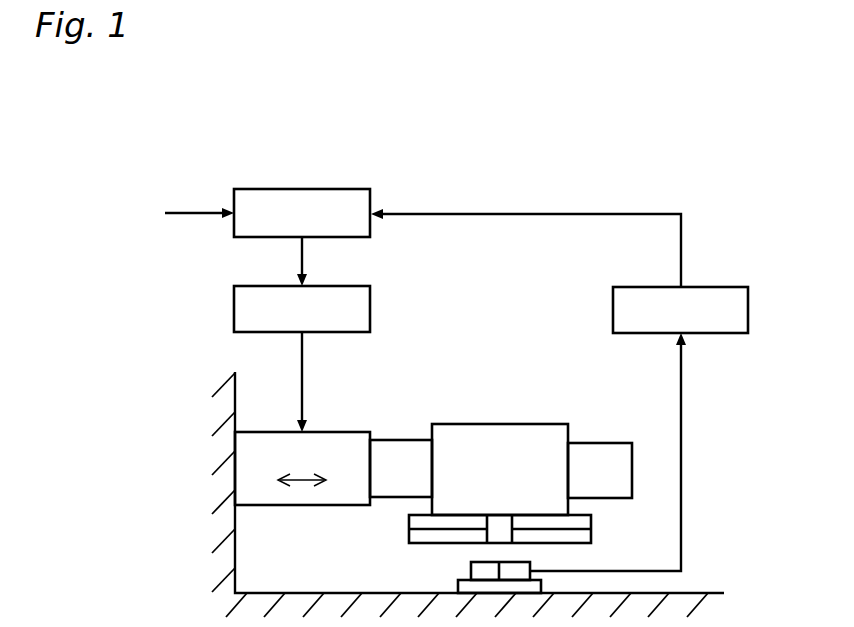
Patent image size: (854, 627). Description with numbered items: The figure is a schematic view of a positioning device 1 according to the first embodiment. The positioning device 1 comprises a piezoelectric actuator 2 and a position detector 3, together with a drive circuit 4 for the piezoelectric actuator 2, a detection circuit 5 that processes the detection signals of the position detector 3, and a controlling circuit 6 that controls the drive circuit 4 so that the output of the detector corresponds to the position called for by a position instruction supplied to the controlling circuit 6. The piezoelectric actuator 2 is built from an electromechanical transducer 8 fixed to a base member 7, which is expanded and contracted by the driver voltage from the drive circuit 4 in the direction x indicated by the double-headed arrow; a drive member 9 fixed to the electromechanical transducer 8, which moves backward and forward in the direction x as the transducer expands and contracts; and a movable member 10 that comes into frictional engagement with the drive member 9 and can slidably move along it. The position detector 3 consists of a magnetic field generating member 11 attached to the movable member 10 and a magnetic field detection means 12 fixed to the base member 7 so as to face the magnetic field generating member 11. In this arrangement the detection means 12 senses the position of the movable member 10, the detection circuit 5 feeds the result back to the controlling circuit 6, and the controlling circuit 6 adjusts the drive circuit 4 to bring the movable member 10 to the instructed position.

The positioning device 1 is at (466, 150).
The piezoelectric actuator 2 is at (478, 406).
The position detector 3 is at (380, 553).
The drive circuit 4 is at (372, 302).
The detection circuit 5 is at (708, 287).
The controlling circuit 6 is at (306, 189).
The base member 7 is at (267, 593).
The electromechanical transducer 8 is at (337, 432).
The drive member 9 is at (400, 440).
The movable member 10 is at (516, 424).
The magnetic field generating member 11 is at (592, 533).
The magnetic field detection means 12 is at (471, 570).